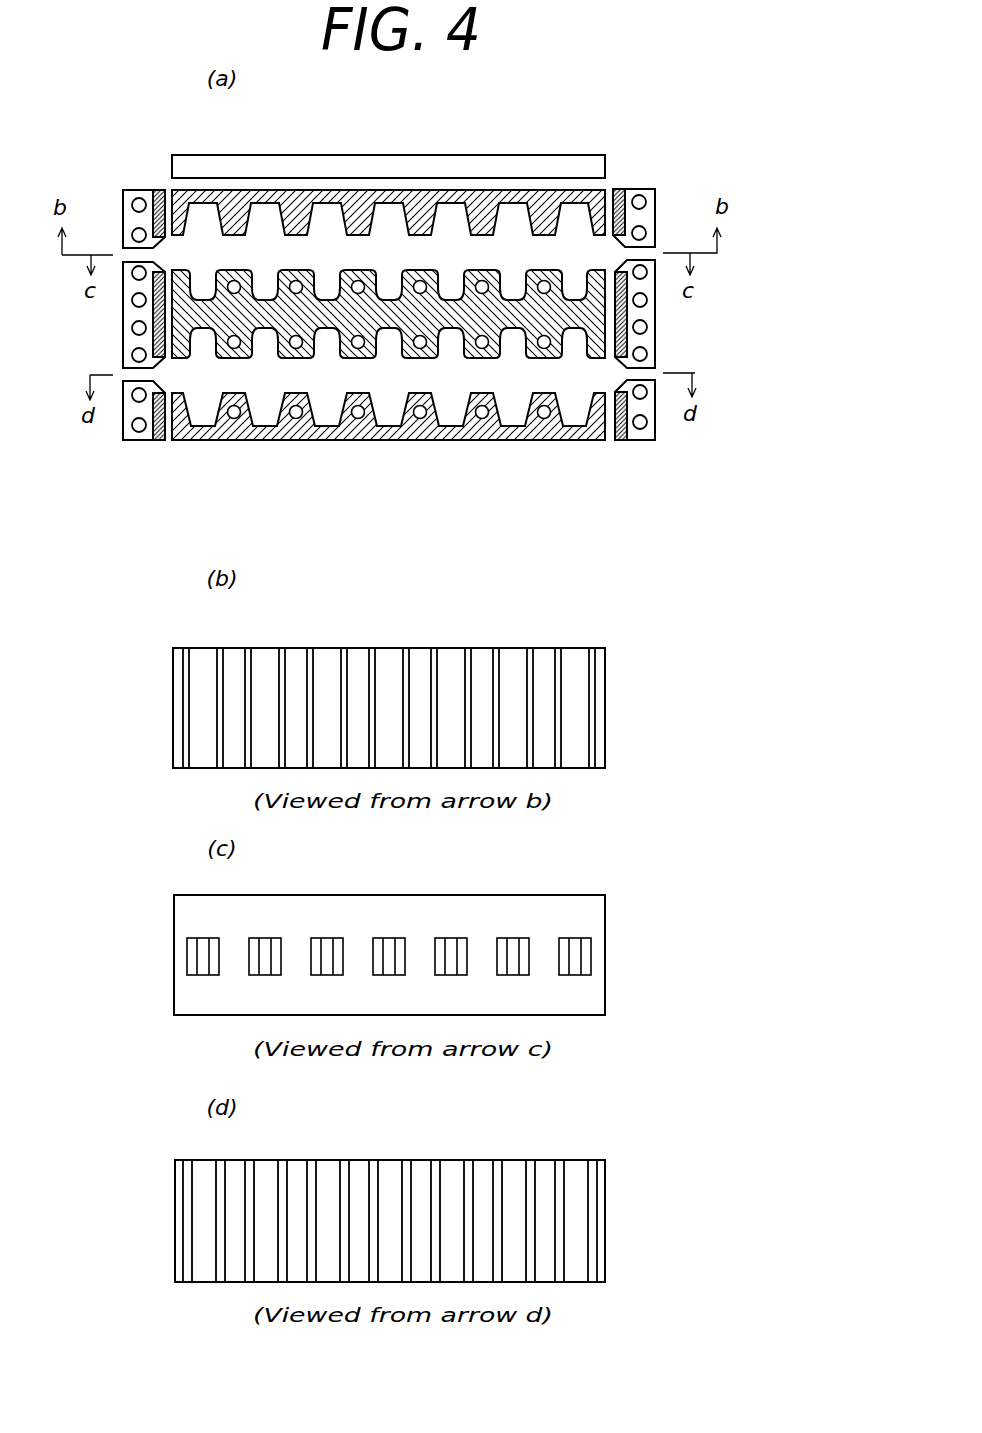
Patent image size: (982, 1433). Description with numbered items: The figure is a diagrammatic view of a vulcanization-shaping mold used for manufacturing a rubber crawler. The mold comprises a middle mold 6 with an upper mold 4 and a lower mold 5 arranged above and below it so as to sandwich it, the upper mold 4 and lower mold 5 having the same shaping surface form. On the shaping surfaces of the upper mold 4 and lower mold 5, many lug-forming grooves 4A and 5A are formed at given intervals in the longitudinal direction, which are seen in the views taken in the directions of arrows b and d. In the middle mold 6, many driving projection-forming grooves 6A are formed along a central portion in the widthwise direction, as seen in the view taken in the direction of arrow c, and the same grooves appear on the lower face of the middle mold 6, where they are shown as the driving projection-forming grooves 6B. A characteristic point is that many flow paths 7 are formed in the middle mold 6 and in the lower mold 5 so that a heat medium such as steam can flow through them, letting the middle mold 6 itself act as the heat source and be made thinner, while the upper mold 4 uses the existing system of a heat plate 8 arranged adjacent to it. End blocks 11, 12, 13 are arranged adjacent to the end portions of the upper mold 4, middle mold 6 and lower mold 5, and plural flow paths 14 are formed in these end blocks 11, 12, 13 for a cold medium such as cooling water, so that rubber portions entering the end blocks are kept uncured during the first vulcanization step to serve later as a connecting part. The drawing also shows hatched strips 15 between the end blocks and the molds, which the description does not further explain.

The upper mold 4 is at (421, 188).
The lug-forming grooves 4A is at (511, 212).
The lower mold 5 is at (464, 452).
The lug-forming grooves 5A is at (390, 418).
The middle mold 6 is at (465, 369).
The driving projection-forming grooves 6A is at (573, 283).
The driving projection-forming grooves 6B is at (578, 343).
The flow paths 7 is at (343, 353).
The heat plate 8 is at (336, 164).
The end block 11 is at (123, 203).
The end block 12 is at (123, 318).
The end block 13 is at (123, 434).
The flow paths 14 is at (139, 192).
The insulating spacer 15 is at (156, 189).